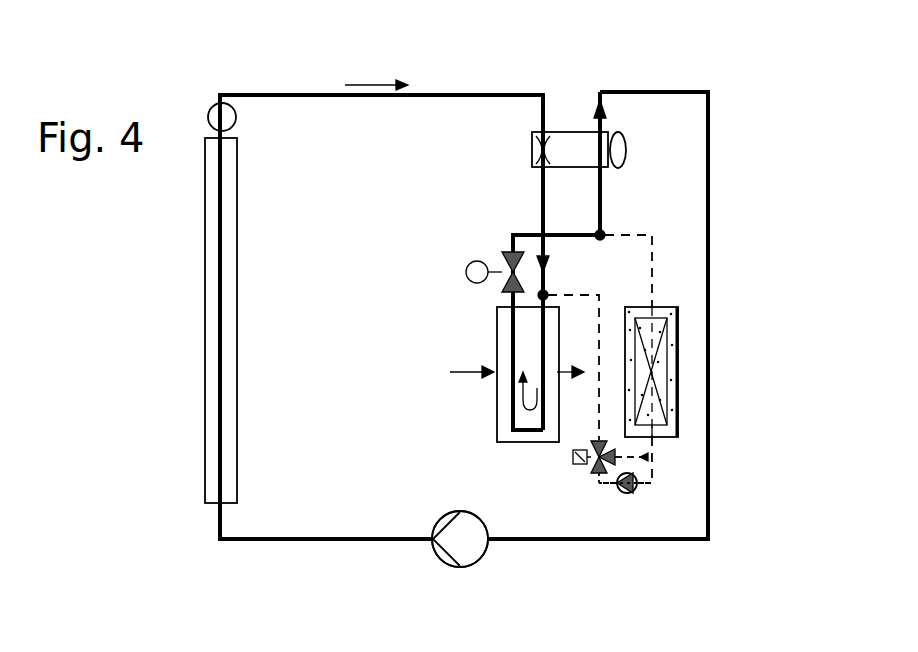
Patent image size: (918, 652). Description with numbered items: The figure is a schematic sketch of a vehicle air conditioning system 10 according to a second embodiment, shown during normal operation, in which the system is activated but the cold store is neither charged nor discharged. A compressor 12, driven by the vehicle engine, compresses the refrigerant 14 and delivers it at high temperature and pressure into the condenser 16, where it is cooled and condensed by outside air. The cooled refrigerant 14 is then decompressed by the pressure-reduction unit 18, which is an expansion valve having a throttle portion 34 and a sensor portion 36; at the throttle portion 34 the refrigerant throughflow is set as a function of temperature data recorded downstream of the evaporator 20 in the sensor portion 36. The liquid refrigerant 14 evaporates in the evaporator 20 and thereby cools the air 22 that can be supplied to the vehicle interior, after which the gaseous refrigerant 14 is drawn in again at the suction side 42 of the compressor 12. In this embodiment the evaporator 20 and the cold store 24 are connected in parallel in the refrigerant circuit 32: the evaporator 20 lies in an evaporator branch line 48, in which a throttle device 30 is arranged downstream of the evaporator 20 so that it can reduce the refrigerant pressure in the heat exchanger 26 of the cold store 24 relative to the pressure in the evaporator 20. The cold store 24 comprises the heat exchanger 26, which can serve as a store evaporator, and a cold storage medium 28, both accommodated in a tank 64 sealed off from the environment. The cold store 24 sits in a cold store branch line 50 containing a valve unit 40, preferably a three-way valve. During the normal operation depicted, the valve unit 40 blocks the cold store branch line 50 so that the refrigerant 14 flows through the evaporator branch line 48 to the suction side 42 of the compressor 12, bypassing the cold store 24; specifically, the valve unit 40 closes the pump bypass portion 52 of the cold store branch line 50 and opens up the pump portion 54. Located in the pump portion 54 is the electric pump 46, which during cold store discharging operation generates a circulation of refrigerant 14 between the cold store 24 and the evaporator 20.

The vehicle air conditioning system 10 is at (697, 78).
The compressor 12 is at (470, 552).
The refrigerant 14 is at (360, 84).
The condenser 16 is at (205, 330).
The pressure-reduction unit 18 is at (578, 118).
The evaporator 20 is at (497, 330).
The air 22 is at (456, 376).
The cold store 24 is at (692, 316).
The heat exchanger 26 is at (668, 342).
The cold storage medium 28 is at (667, 430).
The throttle device 30 is at (492, 262).
The refrigerant circuit 32 is at (274, 72).
The throttle portion 34 is at (532, 152).
The sensor portion 36 is at (627, 150).
The valve unit 40 is at (583, 467).
The suction side 42 is at (480, 532).
The electric pump 46 is at (627, 494).
The evaporator branch line 48 is at (518, 235).
The cold store branch line 50 is at (660, 272).
The pump bypass portion 52 is at (628, 458).
The pump portion 54 is at (645, 486).
The tank 64 is at (678, 375).